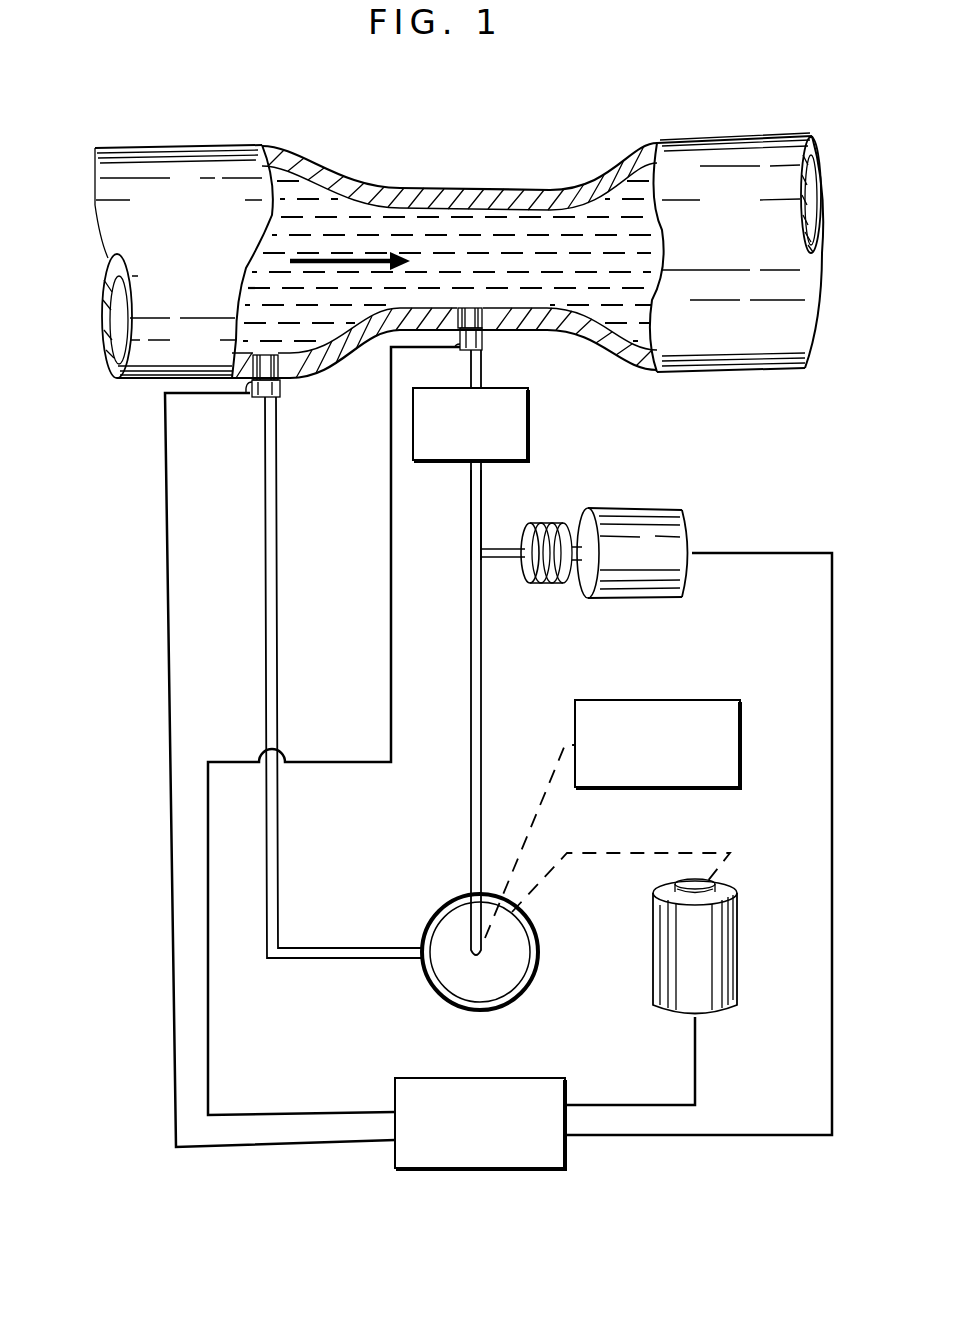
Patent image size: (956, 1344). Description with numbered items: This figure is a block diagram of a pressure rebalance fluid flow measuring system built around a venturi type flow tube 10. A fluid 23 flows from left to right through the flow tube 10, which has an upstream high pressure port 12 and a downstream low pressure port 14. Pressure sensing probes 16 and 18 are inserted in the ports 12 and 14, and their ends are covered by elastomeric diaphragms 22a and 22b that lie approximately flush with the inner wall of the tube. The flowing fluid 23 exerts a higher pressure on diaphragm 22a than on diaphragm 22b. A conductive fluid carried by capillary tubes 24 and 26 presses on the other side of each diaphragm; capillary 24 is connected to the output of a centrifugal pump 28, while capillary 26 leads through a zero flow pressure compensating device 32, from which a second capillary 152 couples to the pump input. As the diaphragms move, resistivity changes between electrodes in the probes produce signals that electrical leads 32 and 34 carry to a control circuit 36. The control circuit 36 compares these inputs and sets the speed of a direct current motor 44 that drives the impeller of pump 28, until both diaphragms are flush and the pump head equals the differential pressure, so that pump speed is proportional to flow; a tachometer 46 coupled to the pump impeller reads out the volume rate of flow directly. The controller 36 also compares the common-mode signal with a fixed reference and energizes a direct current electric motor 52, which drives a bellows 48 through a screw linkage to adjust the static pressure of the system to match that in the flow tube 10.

The flow tube 10 is at (345, 168).
The fluid 23 is at (460, 228).
The elastomeric diaphragm 22a is at (268, 356).
The elastomeric diaphragm 22b is at (470, 308).
The upstream high pressure port 12 is at (283, 384).
The downstream low pressure port 14 is at (486, 330).
The pressure sensing probe 16 is at (250, 388).
The pressure sensing probe 18 is at (466, 320).
The capillary tube 24 is at (278, 503).
The capillary tube 26 is at (480, 382).
The second capillary 152 is at (481, 512).
The zero flow pressure compensating device 32 is at (530, 446).
The electrical lead 34 is at (392, 612).
The bellows 48 is at (562, 583).
The direct current electric motor 52 is at (636, 510).
The tachometer 46 is at (694, 700).
The centrifugal pump 28 is at (526, 995).
The direct current motor 44 is at (738, 974).
The control circuit 36 is at (530, 1170).